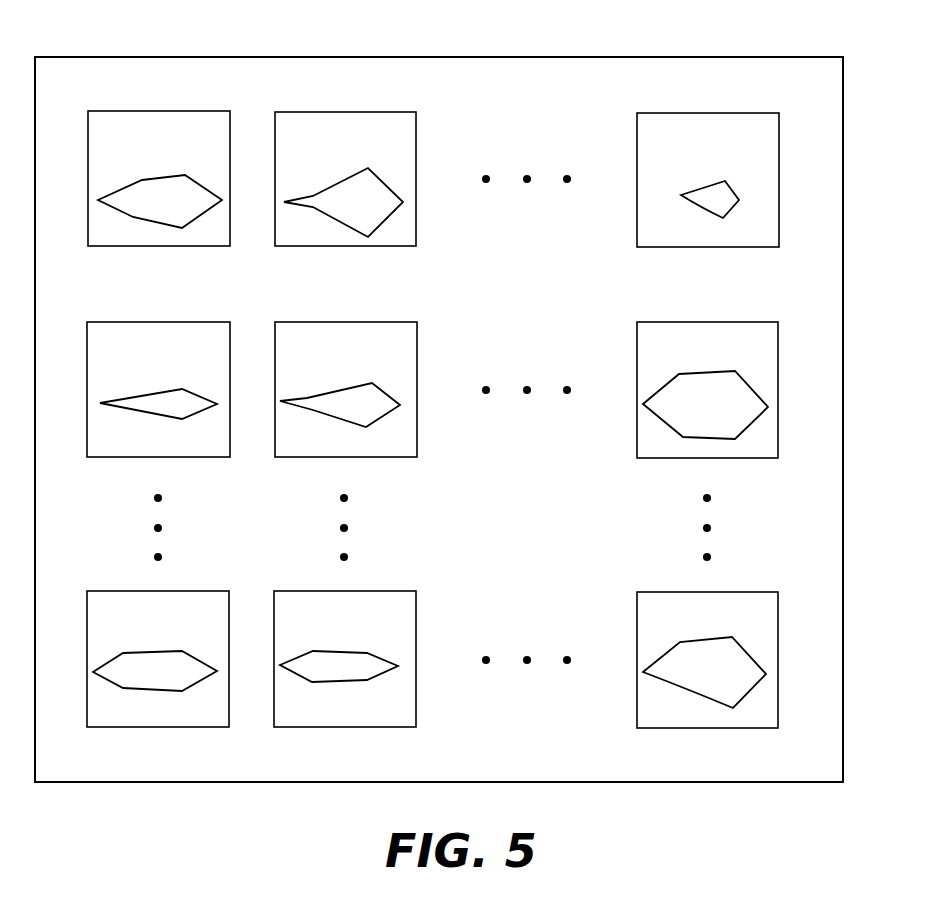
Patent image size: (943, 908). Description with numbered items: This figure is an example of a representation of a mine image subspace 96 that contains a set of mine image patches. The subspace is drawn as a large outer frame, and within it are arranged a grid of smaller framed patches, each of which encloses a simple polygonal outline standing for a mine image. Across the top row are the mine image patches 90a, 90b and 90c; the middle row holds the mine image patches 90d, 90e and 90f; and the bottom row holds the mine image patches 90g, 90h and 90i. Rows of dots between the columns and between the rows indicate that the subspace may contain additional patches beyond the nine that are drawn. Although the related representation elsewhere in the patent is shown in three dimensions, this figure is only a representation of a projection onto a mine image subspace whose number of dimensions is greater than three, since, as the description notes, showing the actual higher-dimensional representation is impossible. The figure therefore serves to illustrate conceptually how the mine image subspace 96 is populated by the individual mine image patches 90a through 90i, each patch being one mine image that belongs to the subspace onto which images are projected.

The mine image subspace 96 is at (753, 57).
The mine image patch 90a is at (185, 146).
The mine image patch 90b is at (325, 138).
The mine image patch 90c is at (688, 138).
The mine image patch 90d is at (138, 348).
The mine image patch 90e is at (325, 348).
The mine image patch 90f is at (690, 348).
The mine image patch 90g is at (138, 618).
The mine image patch 90h is at (324, 618).
The mine image patch 90i is at (690, 618).